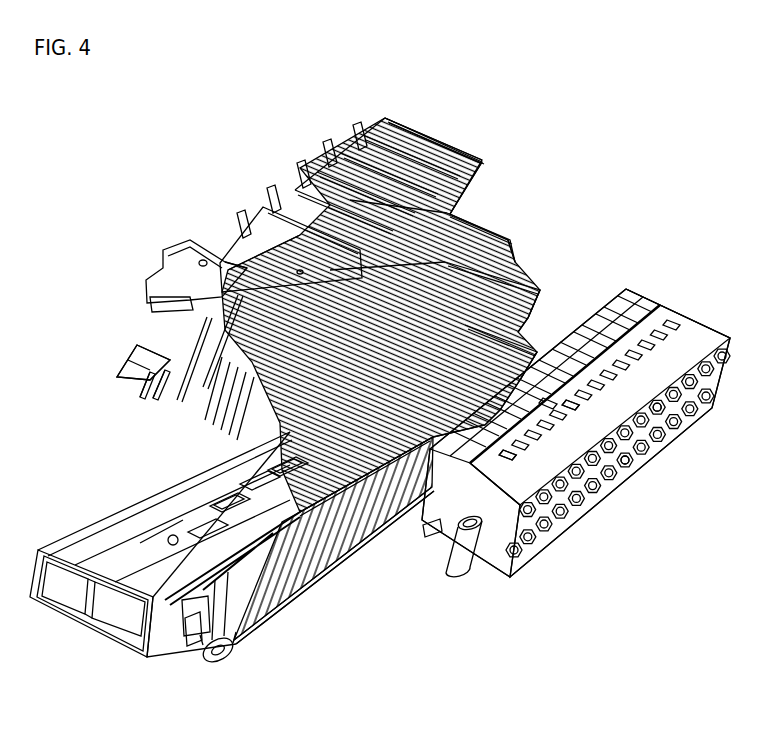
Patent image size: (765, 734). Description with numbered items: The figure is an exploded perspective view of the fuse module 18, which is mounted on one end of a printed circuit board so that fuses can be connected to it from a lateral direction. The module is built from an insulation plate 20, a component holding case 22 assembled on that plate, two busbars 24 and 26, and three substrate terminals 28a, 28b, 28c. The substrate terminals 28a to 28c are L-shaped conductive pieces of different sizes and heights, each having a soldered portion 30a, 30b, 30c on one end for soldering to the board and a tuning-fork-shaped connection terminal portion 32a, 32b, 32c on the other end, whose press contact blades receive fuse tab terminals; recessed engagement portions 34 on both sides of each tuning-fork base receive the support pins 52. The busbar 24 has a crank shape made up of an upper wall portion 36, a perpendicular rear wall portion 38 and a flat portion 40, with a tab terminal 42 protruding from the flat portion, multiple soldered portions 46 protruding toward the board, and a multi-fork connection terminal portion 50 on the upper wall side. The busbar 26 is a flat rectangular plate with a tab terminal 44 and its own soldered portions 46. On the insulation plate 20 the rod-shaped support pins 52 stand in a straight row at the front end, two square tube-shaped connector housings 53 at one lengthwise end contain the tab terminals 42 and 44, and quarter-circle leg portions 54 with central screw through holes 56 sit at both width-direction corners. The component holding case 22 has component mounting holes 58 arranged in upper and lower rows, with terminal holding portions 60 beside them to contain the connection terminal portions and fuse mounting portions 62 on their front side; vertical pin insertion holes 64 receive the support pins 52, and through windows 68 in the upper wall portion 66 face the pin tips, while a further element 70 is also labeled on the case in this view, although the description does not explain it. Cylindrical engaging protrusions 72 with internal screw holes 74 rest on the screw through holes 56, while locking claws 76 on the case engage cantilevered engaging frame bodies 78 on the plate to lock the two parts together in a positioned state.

The fuse module 18 is at (478, 40).
The insulation plate 20 is at (106, 483).
The component holding case 22 is at (683, 274).
The busbar 24 is at (458, 128).
The busbar 26 is at (117, 344).
The substrate terminal 28a is at (483, 208).
The substrate terminal 28b is at (518, 268).
The substrate terminal 28c is at (503, 342).
The soldered portion 30a is at (206, 412).
The soldered portion 30b is at (263, 467).
The soldered portion 30c is at (261, 513).
The connection terminal portion 32a is at (512, 240).
The connection terminal portion 32b is at (543, 308).
The connection terminal portion 32c is at (583, 378).
The engagement portion 34 is at (440, 152).
The upper wall portion 36 is at (263, 243).
The rear wall portion 38 is at (210, 255).
The flat portion 40 is at (190, 263).
The tab terminal 42 is at (172, 300).
The tab terminal 44 is at (137, 370).
The soldered portion 46 is at (276, 204).
The connection terminal portion 50 is at (494, 165).
The support pin 52 is at (248, 594).
The connector housing 53 is at (117, 566).
The leg portion 54 is at (213, 660).
The screw through hole 56 is at (225, 658).
The component mounting hole 58 is at (655, 433).
The terminal holding portion 60 is at (594, 300).
The fuse mounting portion 62 is at (641, 433).
The pin insertion hole 64 is at (527, 443).
The upper wall portion 66 is at (695, 343).
The through window 68 is at (539, 430).
The guide slot 70 is at (532, 420).
The engaging protrusion 72 is at (456, 556).
The screw hole 74 is at (474, 523).
The locking claw 76 is at (428, 530).
The engaging frame body 78 is at (192, 632).